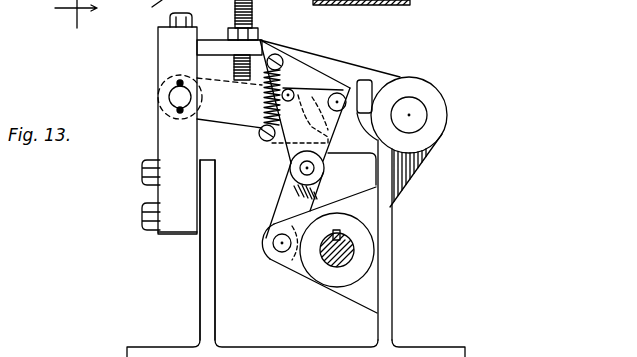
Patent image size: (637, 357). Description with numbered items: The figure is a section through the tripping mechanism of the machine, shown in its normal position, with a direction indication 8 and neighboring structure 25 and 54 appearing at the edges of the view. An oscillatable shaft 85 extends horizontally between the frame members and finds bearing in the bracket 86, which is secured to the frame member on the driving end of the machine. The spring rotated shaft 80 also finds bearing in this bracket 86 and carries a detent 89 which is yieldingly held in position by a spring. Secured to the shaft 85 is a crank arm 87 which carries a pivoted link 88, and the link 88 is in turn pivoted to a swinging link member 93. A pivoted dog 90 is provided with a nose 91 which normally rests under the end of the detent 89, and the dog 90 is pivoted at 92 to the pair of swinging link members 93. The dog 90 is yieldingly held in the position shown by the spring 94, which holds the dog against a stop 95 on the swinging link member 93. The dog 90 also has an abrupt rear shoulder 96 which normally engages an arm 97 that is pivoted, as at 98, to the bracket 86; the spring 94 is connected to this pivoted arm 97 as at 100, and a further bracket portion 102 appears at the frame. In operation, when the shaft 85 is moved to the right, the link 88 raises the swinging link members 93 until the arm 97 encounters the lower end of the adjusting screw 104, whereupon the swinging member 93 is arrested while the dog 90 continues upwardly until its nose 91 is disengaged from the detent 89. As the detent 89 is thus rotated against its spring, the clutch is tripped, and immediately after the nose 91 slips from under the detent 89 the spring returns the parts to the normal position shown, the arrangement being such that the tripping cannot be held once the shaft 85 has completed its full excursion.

The direction arrow 8 is at (76, 16).
The frame member 25 is at (144, 7).
The base 54 is at (322, 258).
The spring rotated shaft 80 is at (417, 117).
The oscillatable shaft 85 is at (347, 250).
The bracket 86 is at (173, 43).
The crank arm 87 is at (293, 268).
The pivoted link 88 is at (300, 192).
The detent 89 is at (392, 72).
The pivoted dog 90 is at (300, 72).
The nose 91 is at (378, 143).
The pivot 92 is at (347, 88).
The swinging link member 93 is at (217, 83).
The spring 94 is at (264, 100).
The stop 95 is at (294, 93).
The abrupt rear shoulder 96 is at (331, 157).
The arm 97 is at (276, 142).
The pivot 98 is at (175, 92).
The spring connection 100 is at (260, 135).
The bracket 102 is at (217, 248).
The adjusting screw 104 is at (256, 6).